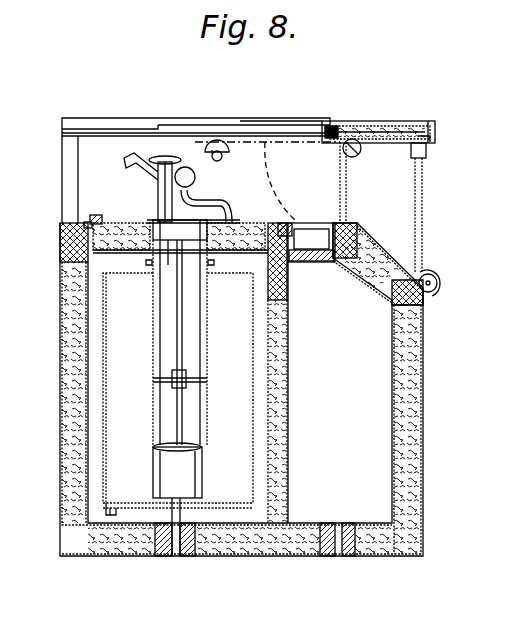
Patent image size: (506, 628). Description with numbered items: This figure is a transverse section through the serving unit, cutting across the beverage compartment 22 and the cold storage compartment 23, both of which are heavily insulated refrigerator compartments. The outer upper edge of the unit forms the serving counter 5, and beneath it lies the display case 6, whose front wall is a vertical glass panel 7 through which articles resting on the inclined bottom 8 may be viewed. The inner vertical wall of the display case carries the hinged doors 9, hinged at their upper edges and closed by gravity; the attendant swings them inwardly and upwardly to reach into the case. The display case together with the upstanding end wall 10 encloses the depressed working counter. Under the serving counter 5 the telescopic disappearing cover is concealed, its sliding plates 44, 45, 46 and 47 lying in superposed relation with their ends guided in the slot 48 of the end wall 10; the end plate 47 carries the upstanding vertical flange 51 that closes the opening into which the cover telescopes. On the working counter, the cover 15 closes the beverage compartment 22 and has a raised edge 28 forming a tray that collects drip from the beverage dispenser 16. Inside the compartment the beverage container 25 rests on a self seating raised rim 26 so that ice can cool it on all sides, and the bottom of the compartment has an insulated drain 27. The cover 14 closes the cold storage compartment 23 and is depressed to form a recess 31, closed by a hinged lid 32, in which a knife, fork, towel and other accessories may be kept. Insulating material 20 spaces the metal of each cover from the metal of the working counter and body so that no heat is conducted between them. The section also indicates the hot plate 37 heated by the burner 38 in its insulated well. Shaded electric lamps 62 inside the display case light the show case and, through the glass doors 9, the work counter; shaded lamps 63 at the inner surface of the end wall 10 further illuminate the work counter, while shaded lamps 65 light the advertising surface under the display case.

The serving counter 5 is at (400, 122).
The display case 6 is at (400, 217).
The vertical glass panel 7 is at (424, 191).
The inclined bottom 8 is at (368, 246).
The hinged doors 9 is at (340, 160).
The end wall 10 is at (112, 119).
The cover 14 is at (297, 222).
The cover 15 is at (122, 222).
The beverage dispenser 16 is at (193, 188).
The insulating material 20 is at (86, 225).
The beverage compartment 22 is at (98, 400).
The cold storage compartment 23 is at (376, 388).
The beverage container 25 is at (249, 427).
The self seating raised rim 26 is at (114, 514).
The insulated drain 27 is at (172, 545).
The raised edge 28 is at (108, 216).
The recess 31 is at (314, 240).
The hinged lid 32 is at (312, 224).
The hot plate 37 is at (262, 124).
The burner 38 is at (162, 128).
The sliding plate 44 is at (425, 125).
The sliding plate 45 is at (382, 126).
The sliding plate 46 is at (410, 162).
The end plate 47 is at (352, 128).
The slot 48 is at (196, 126).
The upstanding vertical flange 51 is at (317, 124).
The shaded electric lamp 62 is at (364, 150).
The shaded lamp 63 is at (214, 150).
The shaded lamp 65 is at (440, 283).